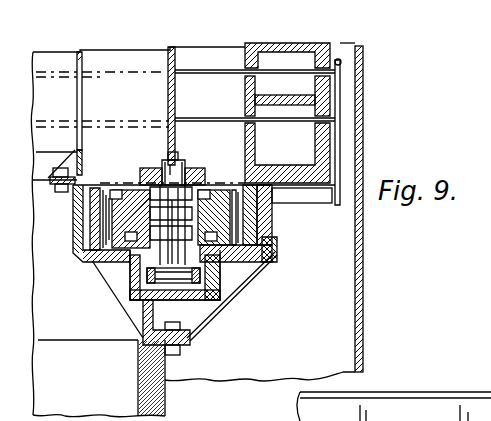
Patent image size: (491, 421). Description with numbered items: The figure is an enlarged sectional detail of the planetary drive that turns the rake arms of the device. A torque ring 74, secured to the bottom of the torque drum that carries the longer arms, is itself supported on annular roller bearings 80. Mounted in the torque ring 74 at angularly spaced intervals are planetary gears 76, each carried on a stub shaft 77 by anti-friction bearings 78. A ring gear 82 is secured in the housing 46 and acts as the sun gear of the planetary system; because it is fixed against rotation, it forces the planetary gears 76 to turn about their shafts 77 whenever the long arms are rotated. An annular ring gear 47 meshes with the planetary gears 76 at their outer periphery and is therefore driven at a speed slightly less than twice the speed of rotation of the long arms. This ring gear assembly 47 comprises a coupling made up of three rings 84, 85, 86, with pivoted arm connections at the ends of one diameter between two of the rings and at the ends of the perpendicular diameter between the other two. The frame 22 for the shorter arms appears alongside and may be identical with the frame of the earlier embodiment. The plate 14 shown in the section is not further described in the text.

The support plate 14 is at (78, 52).
The frame 22 is at (366, 255).
The torque ring 74 is at (148, 190).
The stub shaft 77 is at (173, 180).
The ring 84 is at (330, 43).
The ring 85 is at (325, 90).
The ring 86 is at (325, 142).
The ring gear 82 is at (82, 213).
The annular ring gear 47 is at (262, 218).
The planetary gear 76 is at (250, 228).
The housing 46 is at (280, 260).
The annular roller bearing 80 is at (200, 277).
The anti-friction bearing 78 is at (135, 247).